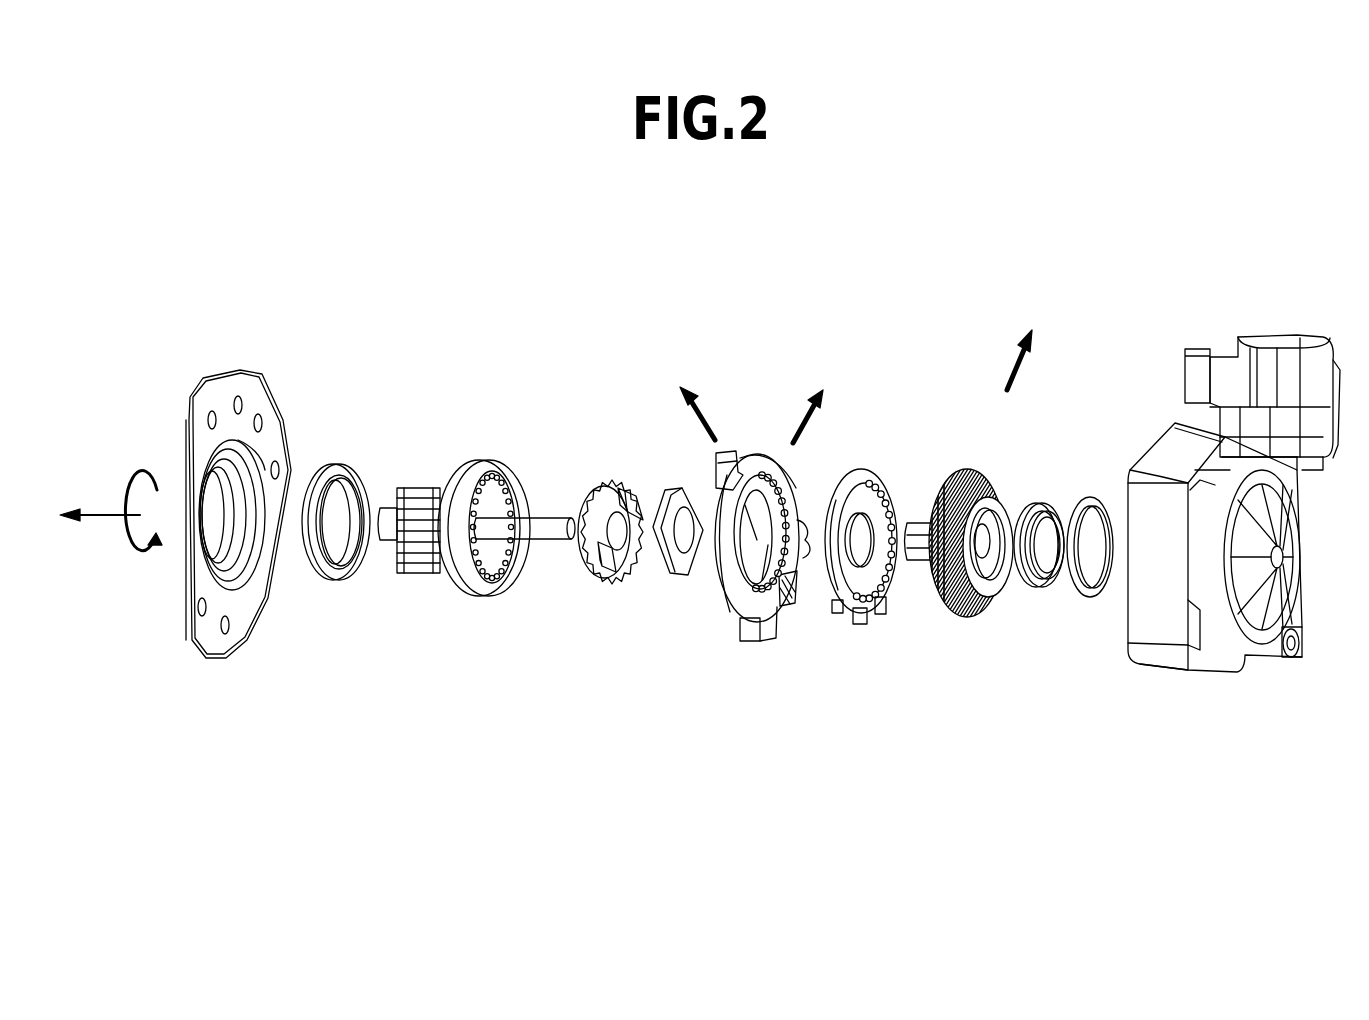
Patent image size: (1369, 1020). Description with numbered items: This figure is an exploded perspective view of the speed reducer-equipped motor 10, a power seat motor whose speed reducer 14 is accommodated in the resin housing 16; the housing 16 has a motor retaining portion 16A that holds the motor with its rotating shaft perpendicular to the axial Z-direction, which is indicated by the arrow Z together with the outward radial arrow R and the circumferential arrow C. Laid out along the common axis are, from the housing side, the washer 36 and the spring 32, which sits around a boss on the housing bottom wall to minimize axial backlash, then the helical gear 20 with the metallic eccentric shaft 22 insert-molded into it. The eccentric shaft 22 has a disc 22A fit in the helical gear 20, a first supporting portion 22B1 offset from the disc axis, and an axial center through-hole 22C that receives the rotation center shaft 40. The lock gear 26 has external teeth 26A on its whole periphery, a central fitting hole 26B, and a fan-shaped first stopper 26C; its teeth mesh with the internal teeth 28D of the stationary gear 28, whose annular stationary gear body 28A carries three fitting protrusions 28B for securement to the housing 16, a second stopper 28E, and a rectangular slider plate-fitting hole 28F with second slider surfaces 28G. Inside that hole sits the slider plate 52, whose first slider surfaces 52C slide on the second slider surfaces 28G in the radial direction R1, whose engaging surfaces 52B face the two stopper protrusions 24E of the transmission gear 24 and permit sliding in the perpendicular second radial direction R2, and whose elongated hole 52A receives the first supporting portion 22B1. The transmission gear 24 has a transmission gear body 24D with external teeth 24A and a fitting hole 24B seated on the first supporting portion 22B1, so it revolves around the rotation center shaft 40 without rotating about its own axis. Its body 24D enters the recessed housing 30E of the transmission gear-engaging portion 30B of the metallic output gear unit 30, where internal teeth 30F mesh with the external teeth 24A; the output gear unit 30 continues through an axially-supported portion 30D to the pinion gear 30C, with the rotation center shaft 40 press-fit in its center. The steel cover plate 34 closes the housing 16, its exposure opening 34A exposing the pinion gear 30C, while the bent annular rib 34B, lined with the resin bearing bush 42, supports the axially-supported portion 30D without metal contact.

The speed reducer-equipped motor 10 is at (900, 250).
The speed reducer 14 is at (646, 345).
The housing 16 is at (1237, 512).
The motor retaining portion 16A is at (1337, 378).
The helical gear 20 is at (960, 612).
The eccentric shaft 22 is at (966, 543).
The disc 22A is at (1000, 592).
The first supporting portion 22B1 is at (943, 471).
The axial center through-hole 22C is at (1000, 520).
The transmission gear 24 is at (591, 528).
The external teeth 24A is at (598, 485).
The fitting hole 24B is at (614, 490).
The transmission gear body 24D is at (575, 492).
The stopper protrusions 24E is at (637, 492).
The lock gear 26 is at (867, 536).
The external teeth 26A is at (837, 608).
The fitting hole 26B is at (880, 478).
The first stopper 26C is at (870, 605).
The stationary gear 28 is at (771, 549).
The stationary gear body 28A is at (780, 615).
The fitting protrusions 28B is at (748, 648).
The internal teeth 28D is at (740, 452).
The second stopper 28E is at (796, 580).
The slider plate-fitting hole 28F is at (800, 492).
The second slider surfaces 28G is at (734, 628).
The output gear unit 30 is at (474, 517).
The transmission gear-engaging portion 30B is at (489, 471).
The pinion gear 30C is at (427, 487).
The axially-supported portion 30D is at (437, 560).
The recessed housing 30E is at (478, 590).
The internal teeth 30F is at (512, 600).
The spring 32 is at (1040, 505).
The cover plate 34 is at (248, 368).
The exposure opening 34A is at (262, 500).
The annular rib 34B is at (181, 505).
The washer 36 is at (1092, 502).
The rotation center shaft 40 is at (545, 540).
The bearing bush 42 is at (332, 580).
The slider plate 52 is at (668, 534).
The elongated hole 52A is at (666, 488).
The engaging surfaces 52B is at (686, 572).
The first slider surfaces 52C is at (664, 492).
The C-direction C is at (137, 555).
The Z-direction Z is at (100, 518).
The R-direction R is at (1010, 367).
The radial direction R1 is at (820, 418).
The second radial direction R2 is at (706, 414).